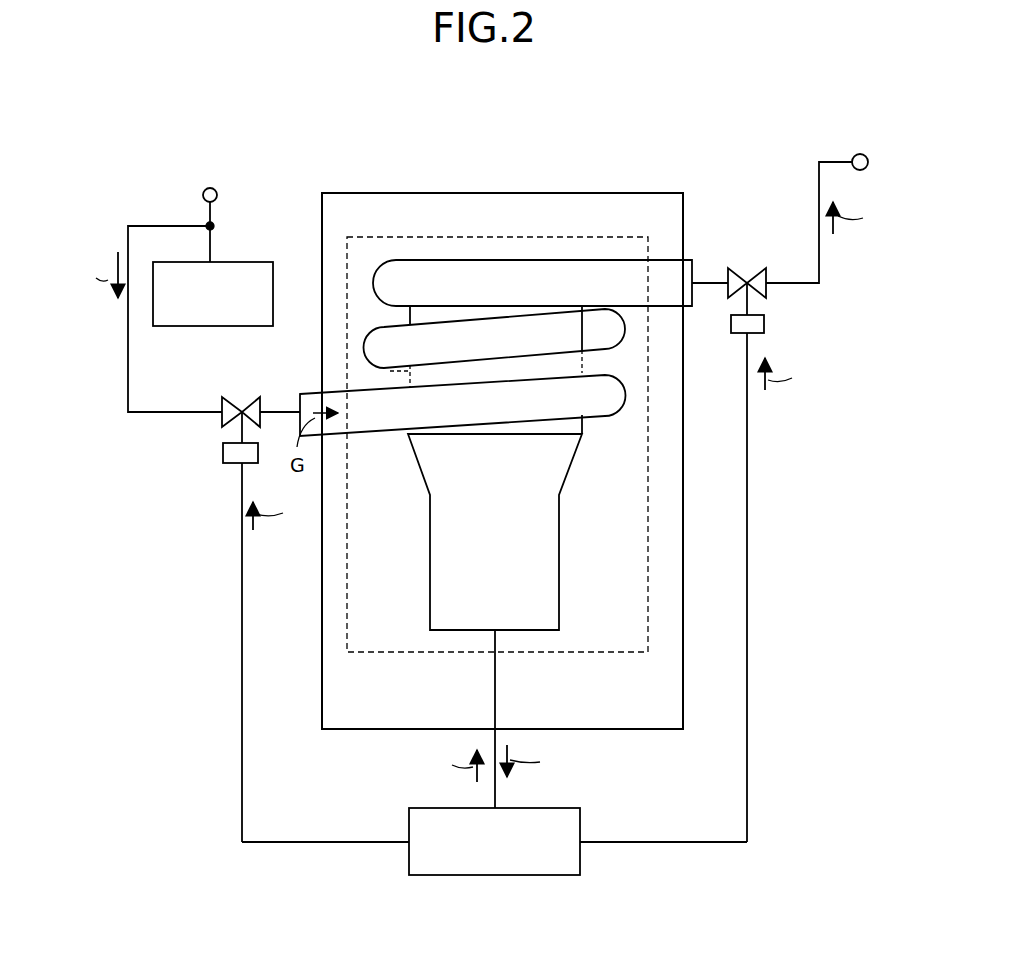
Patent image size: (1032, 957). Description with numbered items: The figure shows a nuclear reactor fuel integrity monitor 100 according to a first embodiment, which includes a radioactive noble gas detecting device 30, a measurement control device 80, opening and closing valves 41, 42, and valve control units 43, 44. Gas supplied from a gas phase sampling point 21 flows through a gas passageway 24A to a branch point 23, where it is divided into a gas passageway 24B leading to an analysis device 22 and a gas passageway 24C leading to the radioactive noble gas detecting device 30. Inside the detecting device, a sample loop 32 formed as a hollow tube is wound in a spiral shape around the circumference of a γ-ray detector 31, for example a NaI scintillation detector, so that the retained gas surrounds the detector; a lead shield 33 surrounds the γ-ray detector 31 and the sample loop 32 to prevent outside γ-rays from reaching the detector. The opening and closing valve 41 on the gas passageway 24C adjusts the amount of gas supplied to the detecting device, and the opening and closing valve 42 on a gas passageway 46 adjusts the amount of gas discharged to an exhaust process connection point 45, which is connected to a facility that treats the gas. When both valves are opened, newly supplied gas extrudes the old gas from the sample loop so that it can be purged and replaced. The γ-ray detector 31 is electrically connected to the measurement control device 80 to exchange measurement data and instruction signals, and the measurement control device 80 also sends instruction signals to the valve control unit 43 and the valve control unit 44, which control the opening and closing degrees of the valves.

The nuclear reactor fuel integrity monitor 100 is at (449, 142).
The radioactive noble gas detecting device 30 is at (594, 192).
The lead shield 33 is at (648, 463).
The γ-ray detector 31 is at (570, 358).
The sample loop 32 is at (625, 327).
The opening and closing valve 42 is at (741, 268).
The gas passageway 46 is at (820, 269).
The exhaust process connection point 45 is at (862, 153).
The valve control unit 44 is at (766, 326).
The gas phase sampling point 21 is at (218, 193).
The gas passageway 24A is at (213, 212).
The branch point 23 is at (208, 224).
The gas passageway 24B is at (213, 240).
The analysis device 22 is at (274, 288).
The gas passageway 24C is at (133, 418).
The opening and closing valve 41 is at (246, 397).
The valve control unit 43 is at (223, 454).
The measurement control device 80 is at (582, 866).